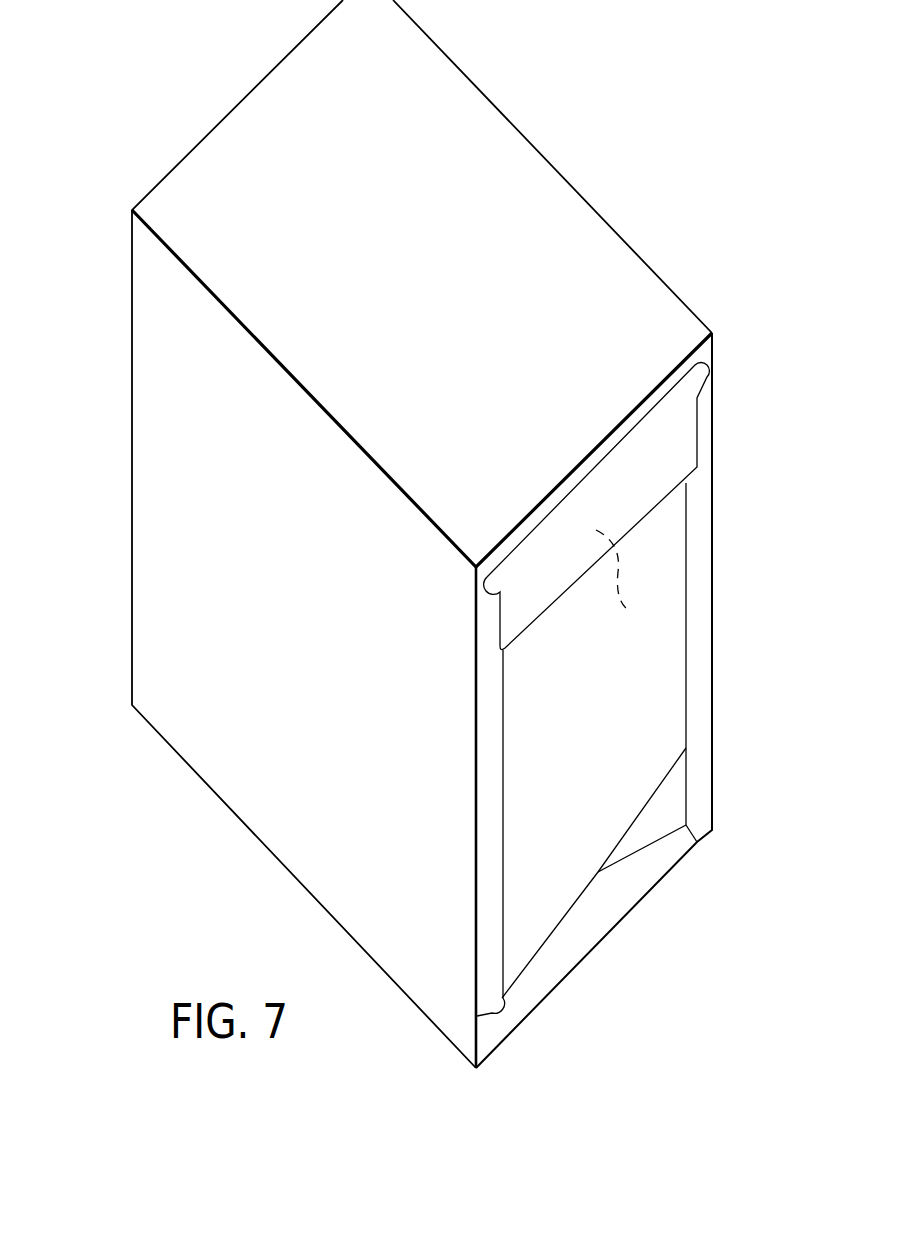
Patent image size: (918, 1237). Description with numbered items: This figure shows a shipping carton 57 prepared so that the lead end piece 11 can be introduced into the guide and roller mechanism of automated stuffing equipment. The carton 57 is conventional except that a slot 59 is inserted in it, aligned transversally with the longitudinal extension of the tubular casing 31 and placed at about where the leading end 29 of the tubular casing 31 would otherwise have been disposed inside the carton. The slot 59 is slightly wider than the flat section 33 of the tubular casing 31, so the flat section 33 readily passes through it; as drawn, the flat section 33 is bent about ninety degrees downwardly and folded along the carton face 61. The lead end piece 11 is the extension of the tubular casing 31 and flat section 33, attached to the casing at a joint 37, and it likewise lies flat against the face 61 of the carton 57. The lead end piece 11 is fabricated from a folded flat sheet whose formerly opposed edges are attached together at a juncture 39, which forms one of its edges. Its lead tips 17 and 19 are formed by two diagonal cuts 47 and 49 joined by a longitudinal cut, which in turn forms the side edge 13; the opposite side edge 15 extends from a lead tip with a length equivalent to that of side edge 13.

The shipping carton 57 is at (120, 458).
The lead end piece 11 is at (663, 650).
The side edge 13 is at (687, 793).
The lead tip 17 is at (698, 846).
The diagonal cut 47 is at (647, 850).
The diagonal cut 49 is at (525, 975).
The flat section 33 is at (681, 448).
The slot 59 is at (692, 383).
The leading end 29 is at (664, 518).
The joint 37 is at (633, 578).
The tubular casing 31 is at (496, 617).
The carton face 61 is at (485, 735).
The juncture 39 is at (525, 800).
The side edge 15 is at (502, 925).
The lead tip 19 is at (478, 1016).